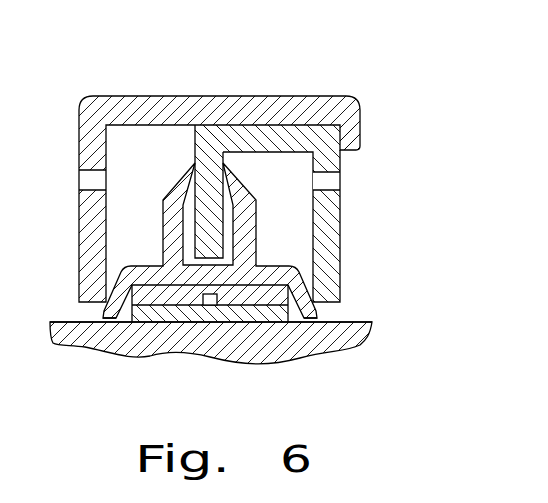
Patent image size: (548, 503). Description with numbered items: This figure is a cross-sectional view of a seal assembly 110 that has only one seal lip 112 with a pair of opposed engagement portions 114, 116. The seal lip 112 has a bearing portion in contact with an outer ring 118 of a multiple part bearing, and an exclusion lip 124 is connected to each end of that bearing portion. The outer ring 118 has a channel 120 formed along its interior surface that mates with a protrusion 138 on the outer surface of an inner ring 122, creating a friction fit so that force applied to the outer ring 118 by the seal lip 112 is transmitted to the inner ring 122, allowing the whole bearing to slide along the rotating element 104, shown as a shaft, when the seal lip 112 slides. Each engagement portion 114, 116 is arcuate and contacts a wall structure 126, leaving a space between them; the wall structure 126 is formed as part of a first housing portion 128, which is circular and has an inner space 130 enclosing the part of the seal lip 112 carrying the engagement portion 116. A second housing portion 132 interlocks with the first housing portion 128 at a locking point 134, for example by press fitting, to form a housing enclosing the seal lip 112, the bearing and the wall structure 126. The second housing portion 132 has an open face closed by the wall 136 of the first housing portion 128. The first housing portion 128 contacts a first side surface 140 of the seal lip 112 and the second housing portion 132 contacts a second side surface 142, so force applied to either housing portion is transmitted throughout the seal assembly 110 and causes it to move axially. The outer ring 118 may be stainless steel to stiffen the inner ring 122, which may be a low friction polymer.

The rotating element 104 is at (103, 340).
The seal assembly 110 is at (252, 80).
The seal lip 112 is at (227, 277).
The first engagement portion 114 is at (175, 197).
The second engagement portion 116 is at (242, 200).
The outer ring 118 is at (272, 300).
The channel 120 is at (198, 295).
The inner ring 122 is at (182, 323).
The exclusion lip 124 is at (102, 318).
The wall structure 126 is at (195, 163).
The first housing portion 128 is at (333, 160).
The inner space 130 is at (248, 163).
The second housing portion 132 is at (98, 115).
The locking point 134 is at (345, 135).
The wall 136 is at (330, 247).
The protrusion 138 is at (207, 305).
The first side surface 140 is at (305, 283).
The second side surface 142 is at (113, 278).